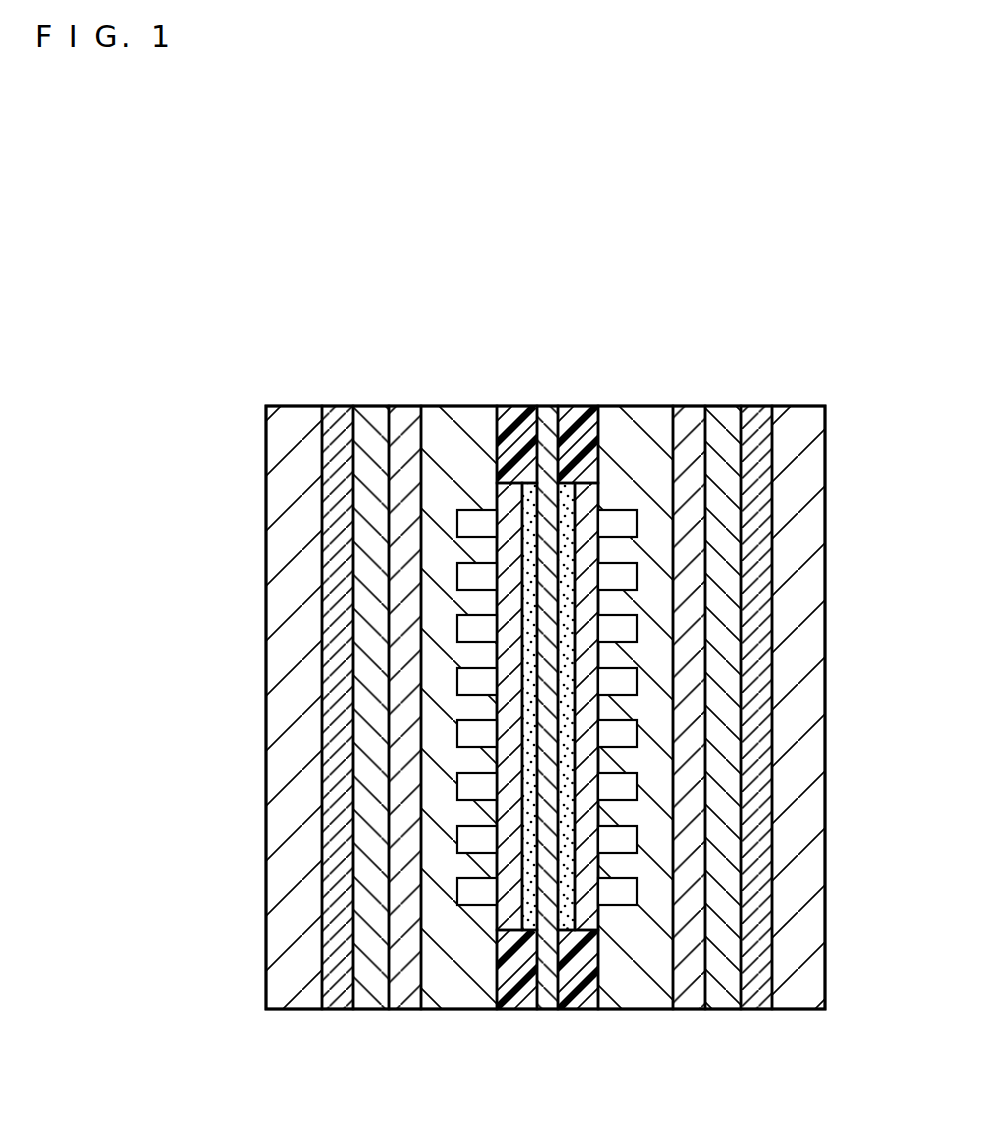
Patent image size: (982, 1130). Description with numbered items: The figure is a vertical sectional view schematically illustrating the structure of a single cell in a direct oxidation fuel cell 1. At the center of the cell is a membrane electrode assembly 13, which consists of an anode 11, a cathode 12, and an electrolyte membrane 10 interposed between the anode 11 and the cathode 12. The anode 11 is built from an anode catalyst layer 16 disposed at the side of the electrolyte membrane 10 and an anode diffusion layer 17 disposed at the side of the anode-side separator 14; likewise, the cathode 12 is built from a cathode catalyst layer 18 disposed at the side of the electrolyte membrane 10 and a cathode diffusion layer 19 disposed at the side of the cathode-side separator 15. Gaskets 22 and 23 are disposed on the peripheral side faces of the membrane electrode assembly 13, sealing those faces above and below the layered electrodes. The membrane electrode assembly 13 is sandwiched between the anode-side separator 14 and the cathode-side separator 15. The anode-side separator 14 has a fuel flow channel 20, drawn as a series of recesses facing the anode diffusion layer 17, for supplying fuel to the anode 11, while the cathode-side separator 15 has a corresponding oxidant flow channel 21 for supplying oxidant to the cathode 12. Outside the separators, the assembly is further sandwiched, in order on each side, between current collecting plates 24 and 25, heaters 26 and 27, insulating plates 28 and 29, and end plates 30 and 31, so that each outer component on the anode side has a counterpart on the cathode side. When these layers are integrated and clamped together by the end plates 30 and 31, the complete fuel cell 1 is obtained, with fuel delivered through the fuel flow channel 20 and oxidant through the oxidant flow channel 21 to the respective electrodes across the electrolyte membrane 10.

The fuel cell 1 is at (732, 202).
The electrolyte membrane 10 is at (549, 420).
The anode 11 is at (489, 604).
The cathode 12 is at (612, 604).
The membrane electrode assembly 13 is at (554, 612).
The anode-side separator 14 is at (447, 436).
The cathode-side separator 15 is at (650, 440).
The anode catalyst layer 16 is at (531, 490).
The anode diffusion layer 17 is at (508, 510).
The cathode catalyst layer 18 is at (568, 507).
The cathode diffusion layer 19 is at (588, 500).
The fuel flow channel 20 is at (476, 897).
The oxidant flow channel 21 is at (622, 900).
The gasket 22 is at (517, 973).
The gasket 23 is at (578, 973).
The current collecting plate 24 is at (407, 481).
The current collecting plate 25 is at (688, 485).
The heater 26 is at (377, 572).
The heater 27 is at (723, 568).
The insulating plate 28 is at (338, 640).
The insulating plate 29 is at (757, 645).
The end plate 30 is at (295, 717).
The end plate 31 is at (800, 721).